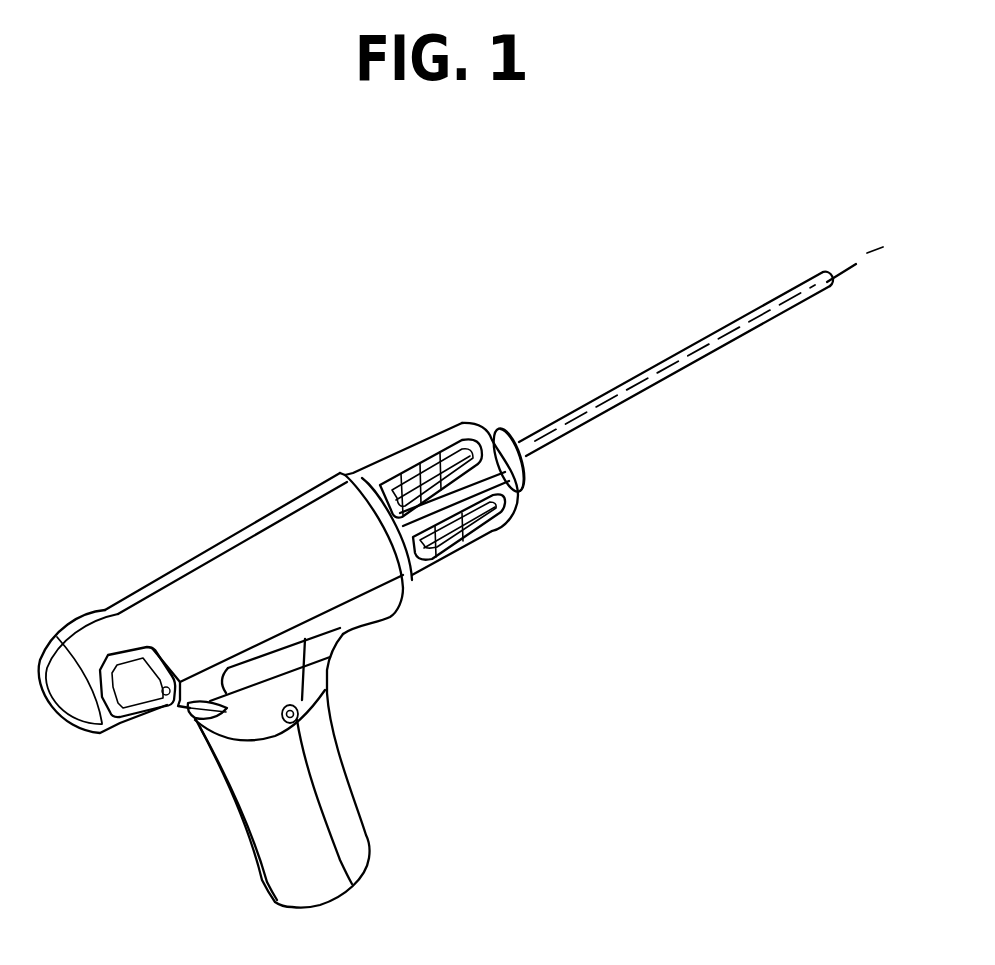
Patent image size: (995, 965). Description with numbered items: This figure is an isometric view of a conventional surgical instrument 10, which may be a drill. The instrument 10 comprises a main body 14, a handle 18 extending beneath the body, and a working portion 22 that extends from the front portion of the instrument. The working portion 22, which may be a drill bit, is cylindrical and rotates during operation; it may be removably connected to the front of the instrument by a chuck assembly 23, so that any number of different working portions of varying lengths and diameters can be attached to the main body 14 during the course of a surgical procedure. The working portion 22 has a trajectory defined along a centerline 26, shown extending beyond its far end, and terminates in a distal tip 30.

The surgical instrument 10 is at (334, 424).
The main body 14 is at (258, 578).
The handle 18 is at (294, 793).
The working portion 22 is at (585, 410).
The chuck assembly 23 is at (524, 463).
The centerline 26 is at (870, 250).
The distal tip 30 is at (829, 289).